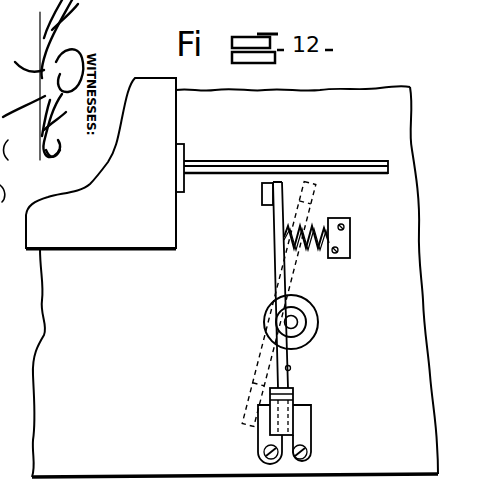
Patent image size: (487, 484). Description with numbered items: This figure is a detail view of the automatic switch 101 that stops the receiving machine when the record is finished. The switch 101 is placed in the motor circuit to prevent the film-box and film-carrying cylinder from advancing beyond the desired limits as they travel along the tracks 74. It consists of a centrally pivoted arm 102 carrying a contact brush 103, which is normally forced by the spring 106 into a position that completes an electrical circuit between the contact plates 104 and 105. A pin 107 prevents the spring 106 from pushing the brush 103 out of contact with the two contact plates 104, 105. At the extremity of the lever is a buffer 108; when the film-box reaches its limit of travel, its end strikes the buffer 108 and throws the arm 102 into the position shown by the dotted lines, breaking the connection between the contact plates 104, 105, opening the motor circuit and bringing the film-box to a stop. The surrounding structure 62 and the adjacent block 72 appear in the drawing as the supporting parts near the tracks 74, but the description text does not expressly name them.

The casing 62 is at (235, 281).
The housing block 72 is at (101, 163).
The tracks 74 is at (371, 165).
The automatic switch 101 is at (298, 321).
The centrally pivoted arm 102 is at (276, 290).
The contact brush 103 is at (296, 393).
The contact plate 104 is at (258, 443).
The contact plate 105 is at (303, 441).
The spring 106 is at (328, 218).
The pin 107 is at (291, 368).
The buffer 108 is at (262, 197).